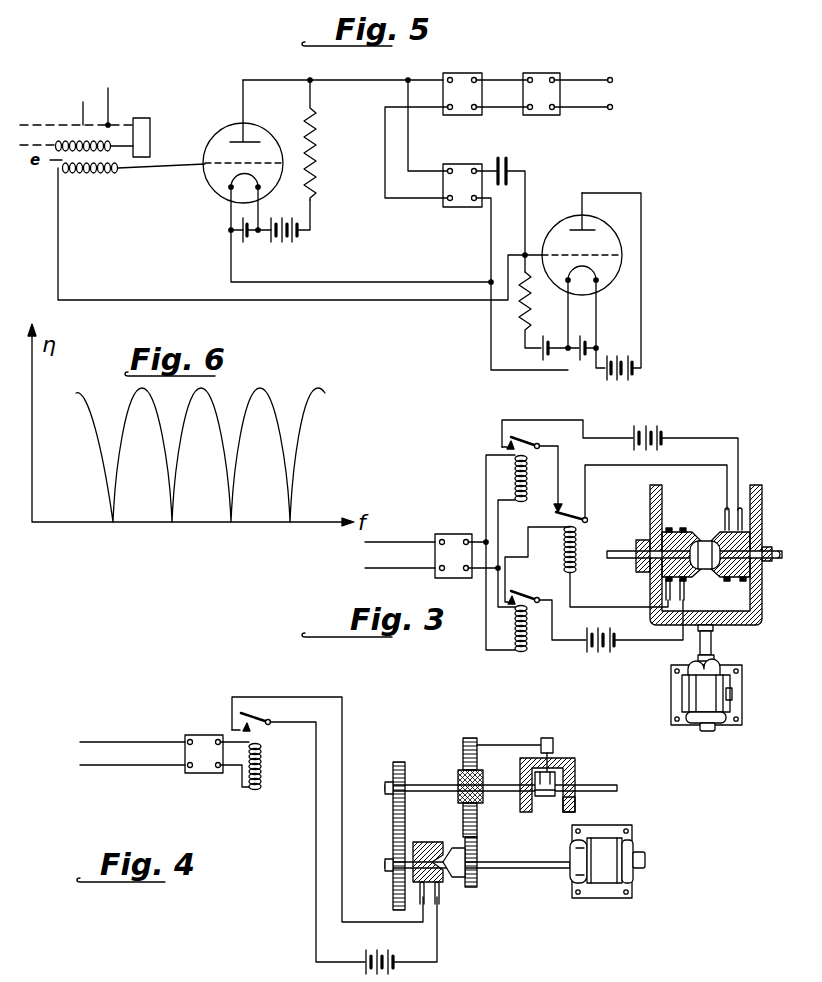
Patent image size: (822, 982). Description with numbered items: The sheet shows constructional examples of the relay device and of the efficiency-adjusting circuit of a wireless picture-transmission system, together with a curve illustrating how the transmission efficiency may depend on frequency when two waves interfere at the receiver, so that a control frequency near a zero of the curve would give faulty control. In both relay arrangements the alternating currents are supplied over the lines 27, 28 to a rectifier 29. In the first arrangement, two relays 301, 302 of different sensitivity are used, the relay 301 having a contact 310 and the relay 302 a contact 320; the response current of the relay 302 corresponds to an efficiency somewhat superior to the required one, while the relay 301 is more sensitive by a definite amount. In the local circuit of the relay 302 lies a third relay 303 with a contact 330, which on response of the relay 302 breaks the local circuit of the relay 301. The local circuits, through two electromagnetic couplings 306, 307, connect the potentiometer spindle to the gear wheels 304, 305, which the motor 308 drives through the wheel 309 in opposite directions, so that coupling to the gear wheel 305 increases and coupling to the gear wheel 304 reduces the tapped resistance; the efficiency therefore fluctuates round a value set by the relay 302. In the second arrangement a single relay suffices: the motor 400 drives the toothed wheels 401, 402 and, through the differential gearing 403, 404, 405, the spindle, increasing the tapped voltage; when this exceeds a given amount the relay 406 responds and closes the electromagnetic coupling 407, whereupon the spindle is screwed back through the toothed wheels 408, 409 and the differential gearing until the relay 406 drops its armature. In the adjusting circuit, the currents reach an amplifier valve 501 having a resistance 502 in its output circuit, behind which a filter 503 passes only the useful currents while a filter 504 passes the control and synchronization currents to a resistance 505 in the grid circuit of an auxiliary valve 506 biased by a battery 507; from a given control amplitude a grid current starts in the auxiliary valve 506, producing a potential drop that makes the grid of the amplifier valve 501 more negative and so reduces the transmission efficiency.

In FIG. 5, the amplifier valve 501 is at (270, 117).
In FIG. 5, the resistance 502 is at (318, 158).
In FIG. 5, the filter 503 is at (462, 94).
In FIG. 5, the filter 504 is at (462, 185).
In FIG. 5, the resistance 505 is at (543, 310).
In FIG. 5, the auxiliary valve 506 is at (612, 218).
In FIG. 5, the battery 507 is at (538, 352).
In FIG. 3, the line 27 is at (400, 560).
In FIG. 4, the line 27 is at (132, 775).
In FIG. 3, the line 28 is at (400, 533).
In FIG. 4, the line 28 is at (132, 732).
In FIG. 3, the rectifier 29 is at (453, 556).
In FIG. 4, the rectifier 29 is at (204, 754).
In FIG. 3, the relay 301 is at (528, 488).
In FIG. 3, the relay 302 is at (528, 638).
In FIG. 3, the third relay 303 is at (562, 561).
In FIG. 3, the gear wheel 304 is at (650, 507).
In FIG. 3, the gear wheel 305 is at (762, 492).
In FIG. 3, the electromagnetic coupling 306 is at (732, 580).
In FIG. 3, the electromagnetic coupling 307 is at (706, 562).
In FIG. 3, the motor 308 is at (717, 699).
In FIG. 3, the wheel 309 is at (738, 631).
In FIG. 3, the contact 310 is at (520, 434).
In FIG. 3, the contact 320 is at (522, 594).
In FIG. 3, the contact 330 is at (588, 522).
In FIG. 4, the motor 400 is at (603, 873).
In FIG. 4, the toothed wheel 401 is at (473, 881).
In FIG. 4, the toothed wheel 402 is at (479, 812).
In FIG. 4, the differential gearing 403 is at (526, 816).
In FIG. 4, the differential gearing 404 is at (563, 760).
In FIG. 4, the differential gearing 405 is at (577, 801).
In FIG. 4, the relay 406 is at (259, 766).
In FIG. 4, the electromagnetic coupling 407 is at (428, 841).
In FIG. 4, the toothed wheel 408 is at (393, 889).
In FIG. 4, the toothed wheel 409 is at (404, 764).